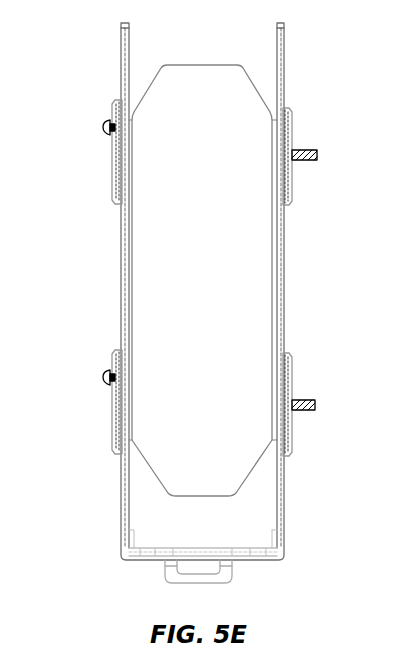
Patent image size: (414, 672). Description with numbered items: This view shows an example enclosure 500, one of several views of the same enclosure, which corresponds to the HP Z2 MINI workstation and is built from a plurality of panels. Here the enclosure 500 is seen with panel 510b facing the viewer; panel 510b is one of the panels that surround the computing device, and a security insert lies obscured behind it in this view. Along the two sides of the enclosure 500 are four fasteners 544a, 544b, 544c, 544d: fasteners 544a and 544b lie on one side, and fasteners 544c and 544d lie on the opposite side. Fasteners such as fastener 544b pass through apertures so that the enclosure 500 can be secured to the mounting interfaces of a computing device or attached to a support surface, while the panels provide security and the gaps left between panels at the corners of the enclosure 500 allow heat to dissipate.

The enclosure 500 is at (309, 83).
The panel 510b is at (223, 261).
The fastener 544a is at (103, 127).
The fastener 544b is at (103, 377).
The fastener 544c is at (316, 153).
The fastener 544d is at (316, 403).